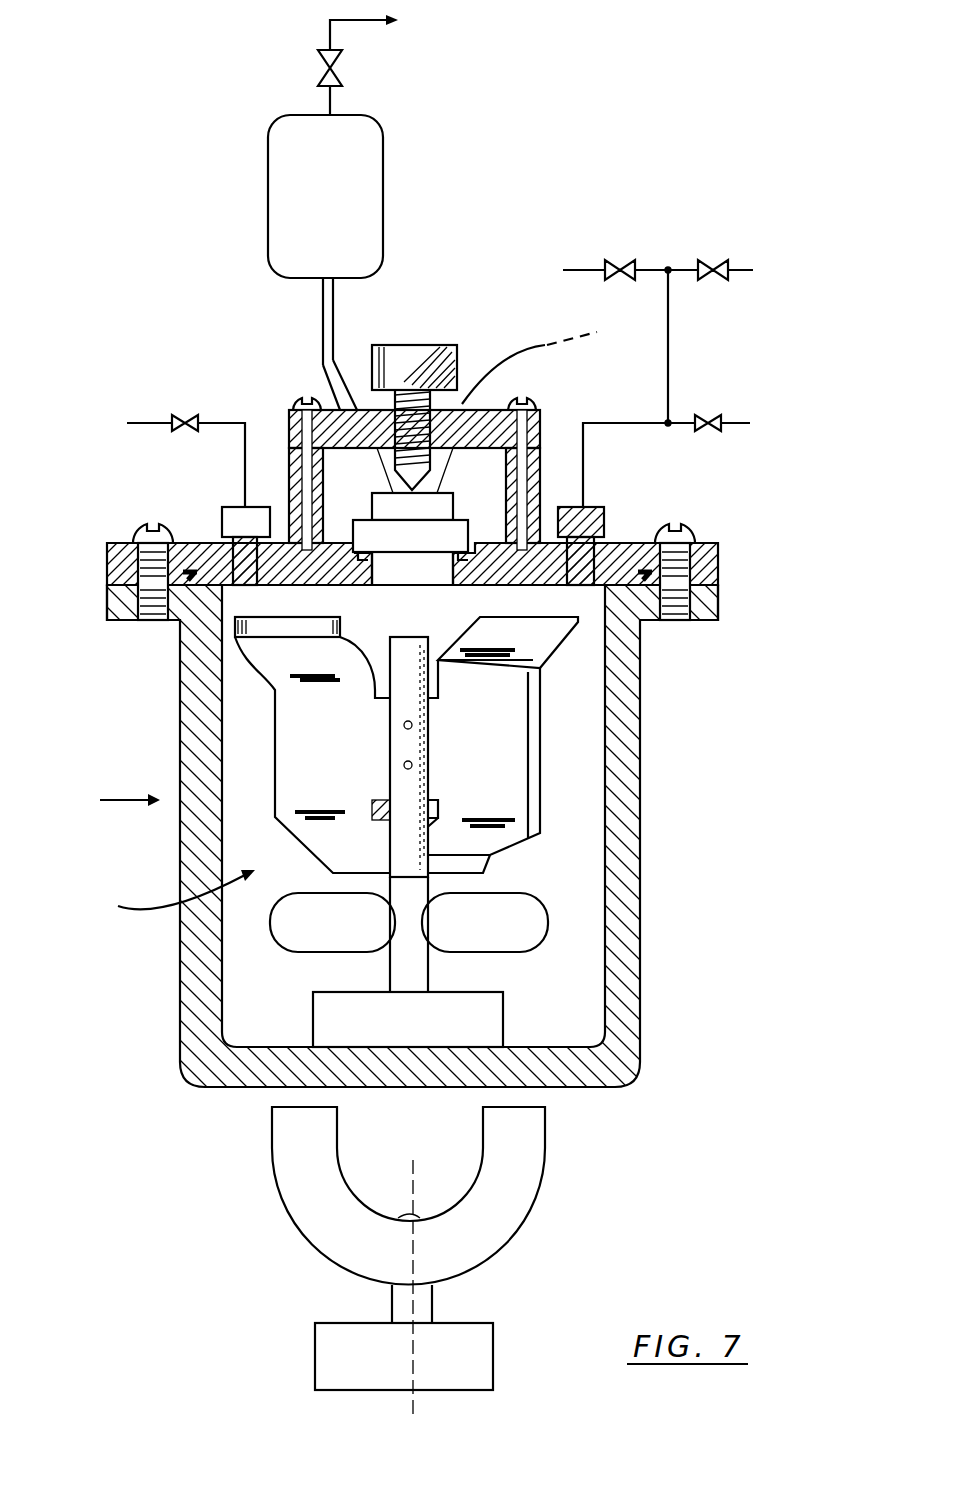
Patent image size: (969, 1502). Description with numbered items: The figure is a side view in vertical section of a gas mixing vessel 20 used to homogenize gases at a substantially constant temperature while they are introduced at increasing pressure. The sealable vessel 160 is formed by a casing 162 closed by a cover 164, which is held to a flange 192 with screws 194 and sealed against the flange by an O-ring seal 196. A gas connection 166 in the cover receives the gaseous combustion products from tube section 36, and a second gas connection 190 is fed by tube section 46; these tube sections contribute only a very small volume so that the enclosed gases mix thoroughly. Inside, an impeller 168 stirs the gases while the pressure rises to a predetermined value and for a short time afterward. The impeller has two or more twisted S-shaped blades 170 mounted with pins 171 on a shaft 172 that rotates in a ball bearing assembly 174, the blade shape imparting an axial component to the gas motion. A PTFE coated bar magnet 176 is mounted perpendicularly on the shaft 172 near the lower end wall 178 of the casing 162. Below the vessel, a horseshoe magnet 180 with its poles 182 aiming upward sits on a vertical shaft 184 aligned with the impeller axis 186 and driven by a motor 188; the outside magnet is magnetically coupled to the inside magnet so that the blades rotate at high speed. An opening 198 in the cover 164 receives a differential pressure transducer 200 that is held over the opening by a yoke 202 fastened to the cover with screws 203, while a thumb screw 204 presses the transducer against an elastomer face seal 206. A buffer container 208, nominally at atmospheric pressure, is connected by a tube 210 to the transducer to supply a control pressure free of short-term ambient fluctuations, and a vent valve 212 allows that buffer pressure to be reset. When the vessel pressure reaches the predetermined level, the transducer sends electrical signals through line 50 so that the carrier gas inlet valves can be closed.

The gas mixing vessel 20 is at (557, 233).
The tube section 36 is at (258, 430).
The tube section 46 is at (640, 421).
The electrical signal line 50 is at (529, 351).
The sealable vessel 160 is at (106, 801).
The casing 162 is at (183, 868).
The cover 164 is at (285, 583).
The gas connection 166 is at (232, 507).
The impeller 168 is at (165, 894).
The blades 170 is at (343, 756).
The pins 171 is at (402, 722).
The shaft 172 is at (432, 712).
The ball bearing assembly 174 is at (424, 1032).
The bar magnet 176 is at (358, 934).
The lower end wall 178 is at (243, 1082).
The horseshoe magnet 180 is at (386, 1262).
The poles 182 is at (483, 1124).
The vertical shaft 184 is at (432, 1310).
The impeller axis 186 is at (418, 1172).
The motor 188 is at (392, 1366).
The second gas connection 190 is at (583, 507).
The flange 192 is at (107, 612).
The screws 194 is at (135, 540).
The O-ring seal 196 is at (191, 568).
The opening 198 is at (433, 584).
The differential pressure transducer 200 is at (432, 547).
The yoke 202 is at (327, 395).
The screws 203 is at (540, 398).
The thumb screw 204 is at (400, 345).
The elastomer face seal 206 is at (466, 584).
The buffer container 208 is at (346, 199).
The tube 210 is at (323, 305).
The vent valve 212 is at (336, 76).